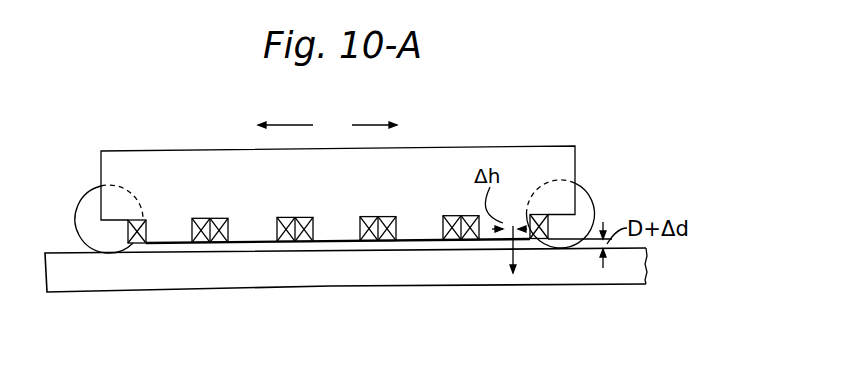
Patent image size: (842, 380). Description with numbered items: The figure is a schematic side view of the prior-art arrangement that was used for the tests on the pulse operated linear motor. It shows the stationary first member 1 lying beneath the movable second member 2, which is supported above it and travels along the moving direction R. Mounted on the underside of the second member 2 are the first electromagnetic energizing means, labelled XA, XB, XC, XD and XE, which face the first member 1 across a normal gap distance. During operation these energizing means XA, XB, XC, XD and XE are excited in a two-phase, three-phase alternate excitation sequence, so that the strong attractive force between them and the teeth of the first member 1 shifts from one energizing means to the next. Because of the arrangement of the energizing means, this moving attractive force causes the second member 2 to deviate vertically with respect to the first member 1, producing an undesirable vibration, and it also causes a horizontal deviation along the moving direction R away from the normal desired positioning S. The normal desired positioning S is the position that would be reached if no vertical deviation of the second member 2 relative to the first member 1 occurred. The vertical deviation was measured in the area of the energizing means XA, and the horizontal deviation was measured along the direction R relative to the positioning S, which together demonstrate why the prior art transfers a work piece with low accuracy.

The first member 1 is at (366, 280).
The second member 2 is at (443, 162).
The first electromagnetic energizing means XA' XA is at (495, 209).
The first electromagnetic energizing means XB' XB is at (392, 211).
The first electromagnetic energizing means XC' XC is at (309, 212).
The first electromagnetic energizing means XD' XD is at (224, 213).
The first electromagnetic energizing means XE' XE is at (151, 214).
The normal desired positioning S is at (515, 259).
The moving direction R is at (327, 124).